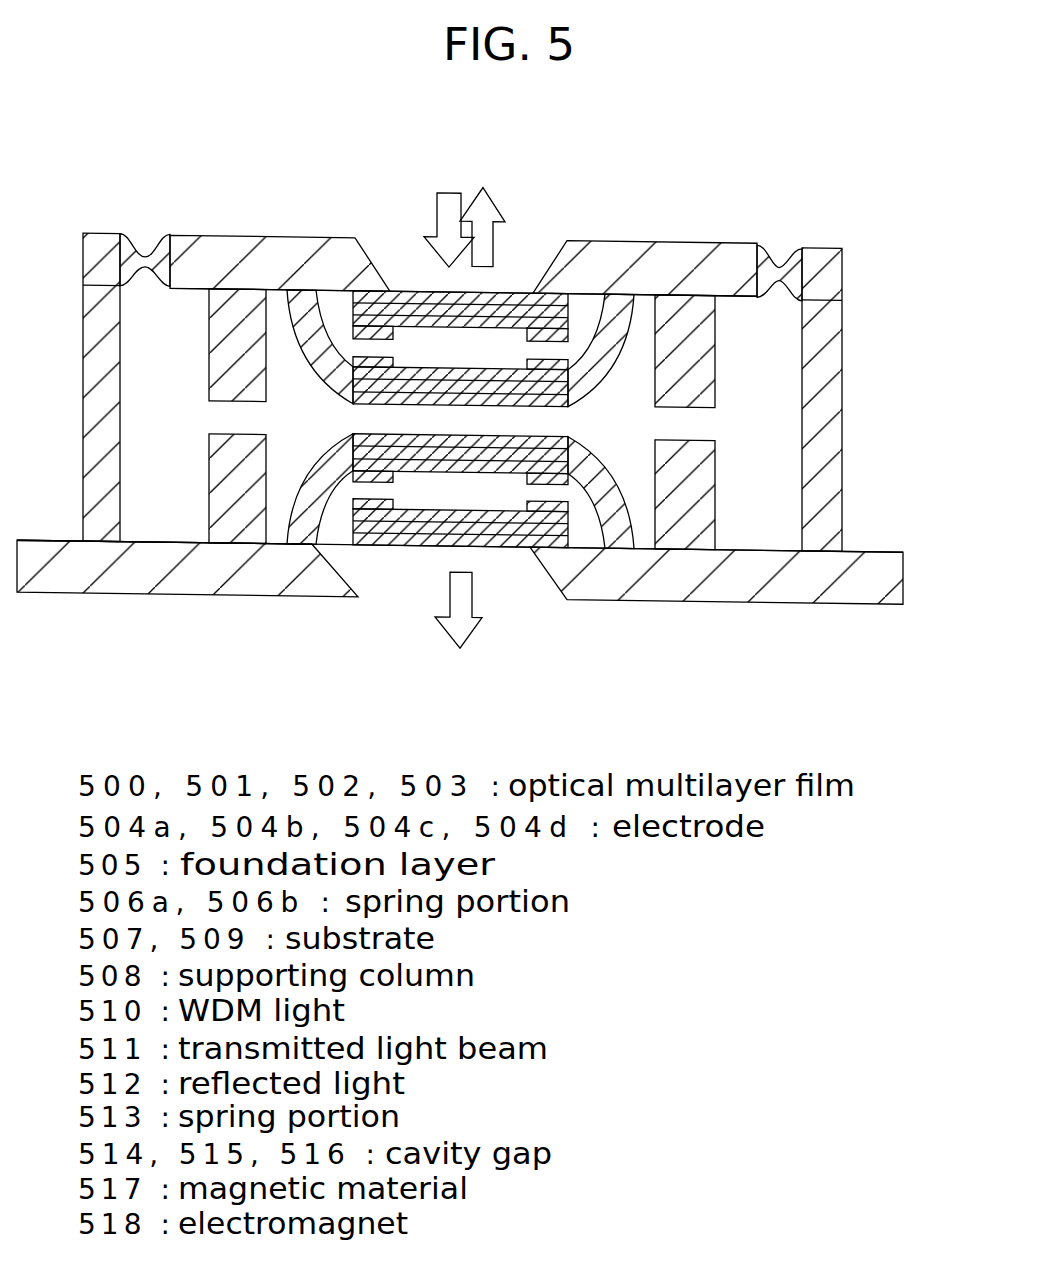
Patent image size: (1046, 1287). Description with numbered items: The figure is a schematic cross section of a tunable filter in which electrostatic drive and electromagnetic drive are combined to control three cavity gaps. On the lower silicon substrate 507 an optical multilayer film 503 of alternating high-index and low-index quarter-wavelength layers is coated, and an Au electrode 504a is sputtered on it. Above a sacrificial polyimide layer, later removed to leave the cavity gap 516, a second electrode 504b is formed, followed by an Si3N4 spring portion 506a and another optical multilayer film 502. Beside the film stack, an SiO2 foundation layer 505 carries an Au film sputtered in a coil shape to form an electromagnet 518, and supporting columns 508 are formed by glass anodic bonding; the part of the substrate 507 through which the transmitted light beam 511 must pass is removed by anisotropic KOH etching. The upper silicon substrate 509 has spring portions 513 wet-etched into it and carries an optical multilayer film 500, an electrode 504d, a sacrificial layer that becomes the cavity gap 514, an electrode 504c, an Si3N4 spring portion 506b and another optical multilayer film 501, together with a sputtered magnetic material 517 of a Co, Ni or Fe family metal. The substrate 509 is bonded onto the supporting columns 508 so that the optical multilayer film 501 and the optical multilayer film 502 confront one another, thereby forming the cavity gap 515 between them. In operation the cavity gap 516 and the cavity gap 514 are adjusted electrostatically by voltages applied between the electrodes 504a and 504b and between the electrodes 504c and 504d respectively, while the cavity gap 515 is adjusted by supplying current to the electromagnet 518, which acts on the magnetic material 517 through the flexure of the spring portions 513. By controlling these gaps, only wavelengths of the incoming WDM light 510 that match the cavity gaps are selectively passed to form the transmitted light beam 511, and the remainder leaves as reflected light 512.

The optical multilayer film 500 is at (483, 305).
The optical multilayer film 501 is at (503, 398).
The optical multilayer film 502 is at (503, 462).
The optical multilayer film 503 is at (480, 530).
The electrode 504a is at (360, 502).
The electrode 504b is at (372, 478).
The electrode 504c is at (372, 358).
The electrode 504d is at (366, 335).
The foundation layer 505 is at (176, 592).
The spring portion 506a is at (300, 528).
The spring portion 506b is at (640, 298).
The substrate 507 is at (733, 587).
The supporting column 508 is at (830, 552).
The substrate 509 is at (264, 255).
The WDM light 510 is at (437, 192).
The transmitted light beam 511 is at (463, 500).
The reflected light 512 is at (492, 208).
The spring portion 513 is at (775, 255).
The cavity gap 514 is at (590, 345).
The cavity gap 515 is at (443, 478).
The cavity gap 516 is at (448, 548).
The magnetic material 517 is at (238, 307).
The electromagnet 518 is at (207, 367).